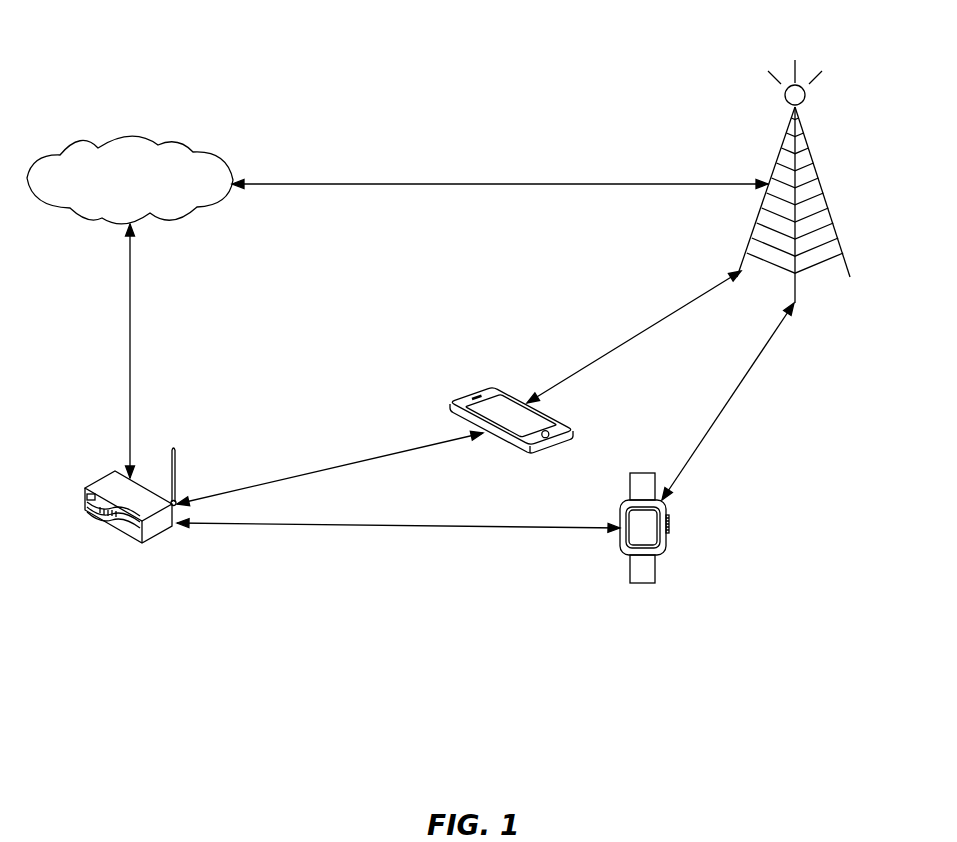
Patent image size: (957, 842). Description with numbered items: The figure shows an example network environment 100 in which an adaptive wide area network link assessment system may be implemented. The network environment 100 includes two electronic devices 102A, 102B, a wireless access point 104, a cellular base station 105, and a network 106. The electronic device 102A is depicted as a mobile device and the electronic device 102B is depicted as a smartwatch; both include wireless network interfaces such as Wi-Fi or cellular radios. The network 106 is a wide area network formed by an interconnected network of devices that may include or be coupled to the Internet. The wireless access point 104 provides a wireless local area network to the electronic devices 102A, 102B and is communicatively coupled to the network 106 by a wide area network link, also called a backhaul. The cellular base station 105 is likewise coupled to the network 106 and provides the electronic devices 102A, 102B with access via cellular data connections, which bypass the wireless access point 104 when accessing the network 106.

The network environment 100 is at (29, 72).
The network 106 is at (172, 140).
The cellular base station 105 is at (818, 167).
The electronic device 102A is at (449, 402).
The electronic device 102B is at (668, 518).
The wireless access point 104 is at (85, 488).